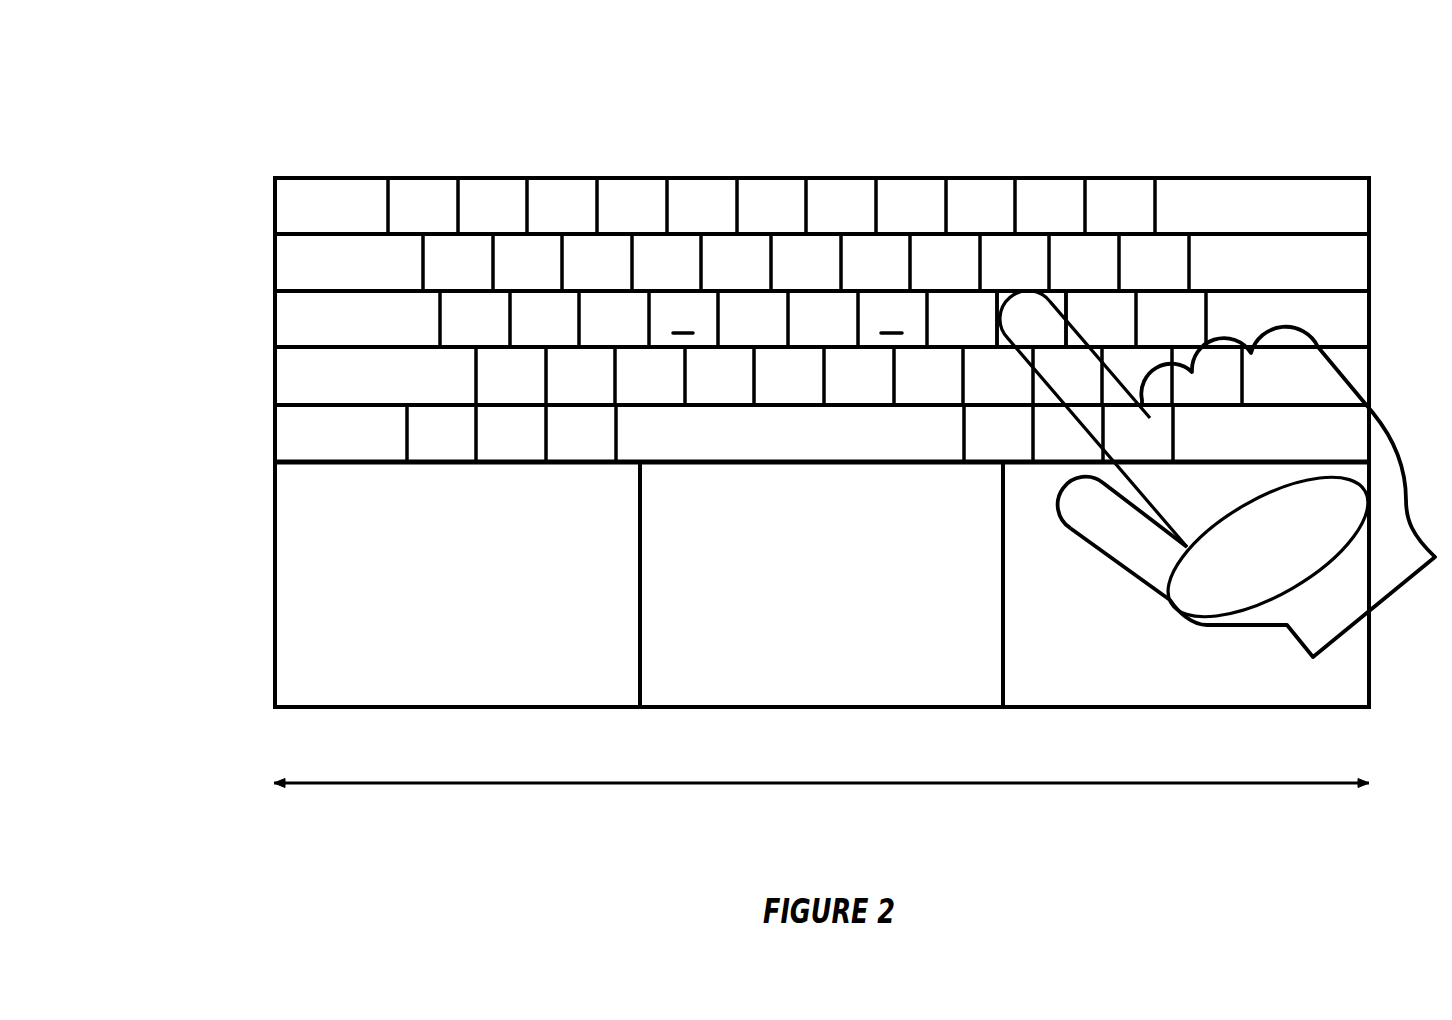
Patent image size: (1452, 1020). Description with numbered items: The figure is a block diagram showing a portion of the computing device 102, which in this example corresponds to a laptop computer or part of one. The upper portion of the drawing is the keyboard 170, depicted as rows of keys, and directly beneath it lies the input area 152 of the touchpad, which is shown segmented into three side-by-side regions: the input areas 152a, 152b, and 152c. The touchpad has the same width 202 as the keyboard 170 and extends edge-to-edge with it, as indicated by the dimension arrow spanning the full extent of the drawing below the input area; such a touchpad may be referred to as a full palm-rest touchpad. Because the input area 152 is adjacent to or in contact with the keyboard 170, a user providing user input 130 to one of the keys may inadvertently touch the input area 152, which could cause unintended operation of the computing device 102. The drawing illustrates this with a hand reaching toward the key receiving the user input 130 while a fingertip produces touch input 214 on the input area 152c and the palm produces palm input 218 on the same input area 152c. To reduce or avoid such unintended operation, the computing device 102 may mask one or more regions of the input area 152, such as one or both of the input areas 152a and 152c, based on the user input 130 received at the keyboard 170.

The computing device 102 is at (114, 82).
The keyboard 170 is at (200, 175).
The user input 130 is at (1044, 330).
The input area 152 is at (249, 467).
The input area 152a is at (350, 678).
The input area 152b is at (718, 678).
The input area 152c is at (1089, 678).
The width 202 is at (477, 784).
The touch input 214 is at (1107, 522).
The palm input 218 is at (1288, 556).